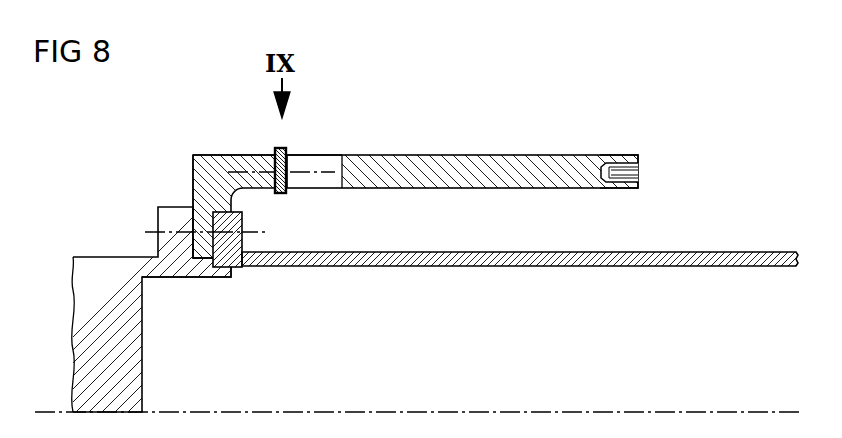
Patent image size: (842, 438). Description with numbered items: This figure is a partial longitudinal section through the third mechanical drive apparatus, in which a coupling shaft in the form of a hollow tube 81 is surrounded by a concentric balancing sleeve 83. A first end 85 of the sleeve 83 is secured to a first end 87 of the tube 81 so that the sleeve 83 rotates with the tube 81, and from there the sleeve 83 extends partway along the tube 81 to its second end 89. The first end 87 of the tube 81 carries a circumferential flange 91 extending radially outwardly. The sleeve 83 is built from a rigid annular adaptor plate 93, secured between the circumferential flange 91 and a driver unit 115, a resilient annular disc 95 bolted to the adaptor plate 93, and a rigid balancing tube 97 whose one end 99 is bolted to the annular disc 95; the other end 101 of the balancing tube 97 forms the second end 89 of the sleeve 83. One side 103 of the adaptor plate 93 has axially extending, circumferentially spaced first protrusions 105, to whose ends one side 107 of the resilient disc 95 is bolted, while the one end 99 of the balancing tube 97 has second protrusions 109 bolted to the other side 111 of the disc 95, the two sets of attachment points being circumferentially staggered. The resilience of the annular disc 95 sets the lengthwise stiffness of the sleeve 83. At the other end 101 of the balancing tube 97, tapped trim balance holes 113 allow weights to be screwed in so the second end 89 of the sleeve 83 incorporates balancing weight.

The hollow tube 81 is at (746, 252).
The balancing sleeve 83 is at (488, 124).
The first end of sleeve 85 is at (193, 186).
The first end of tube 87 is at (219, 272).
The second end of sleeve 89 is at (629, 155).
The circumferential flange 91 is at (230, 248).
The rigid annular adaptor plate 93 is at (197, 162).
The resilient annular disc 95 is at (278, 148).
The rigid balancing tube 97 is at (552, 155).
The one end of balancing tube 99 is at (332, 160).
The other end of balancing tube 101 is at (623, 188).
The one side of annular adaptor plate 103 is at (236, 248).
The first protrusions 105 is at (265, 160).
The one side of resilient annular disc 107 is at (278, 193).
The second protrusions 109 is at (313, 160).
The other side of resilient annular disc 111 is at (287, 193).
The trim balance holes 113 is at (632, 172).
The driver unit 115 is at (132, 363).